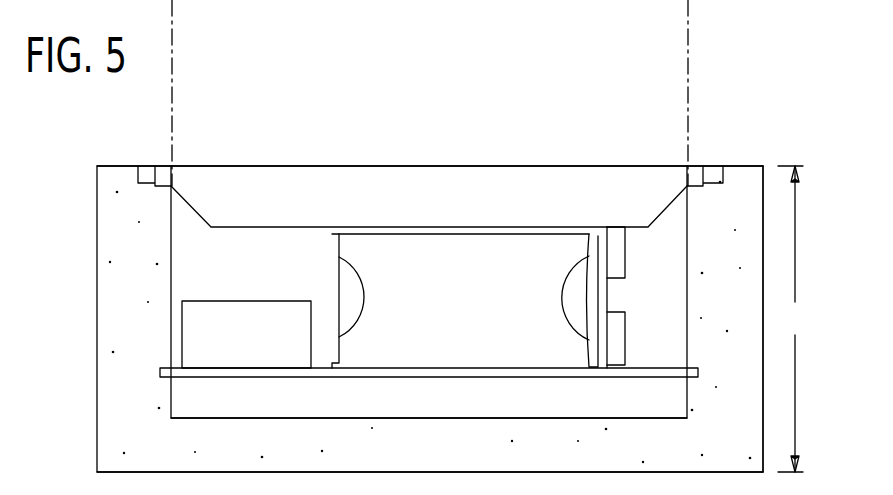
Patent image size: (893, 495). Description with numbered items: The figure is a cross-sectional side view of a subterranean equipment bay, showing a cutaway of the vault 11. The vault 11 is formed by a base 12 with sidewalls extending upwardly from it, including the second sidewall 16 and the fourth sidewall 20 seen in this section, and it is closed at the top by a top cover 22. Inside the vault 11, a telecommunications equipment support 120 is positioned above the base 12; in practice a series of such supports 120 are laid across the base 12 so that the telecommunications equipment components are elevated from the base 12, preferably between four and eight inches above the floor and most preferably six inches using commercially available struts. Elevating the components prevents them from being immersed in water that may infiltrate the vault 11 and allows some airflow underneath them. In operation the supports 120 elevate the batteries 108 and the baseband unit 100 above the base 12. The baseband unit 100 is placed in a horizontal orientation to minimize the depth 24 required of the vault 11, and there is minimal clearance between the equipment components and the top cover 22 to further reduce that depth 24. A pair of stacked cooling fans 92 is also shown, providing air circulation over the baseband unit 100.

The fourth sidewall 20 is at (95, 320).
The top cover 22 is at (645, 163).
The vault 11 is at (750, 237).
The second sidewall 16 is at (765, 418).
The base 12 is at (468, 420).
The depth 24 is at (792, 319).
The telecommunications equipment support 120 is at (352, 372).
The batteries 108 is at (243, 300).
The baseband unit 100 is at (470, 247).
The stacked cooling fans 92 is at (618, 253).